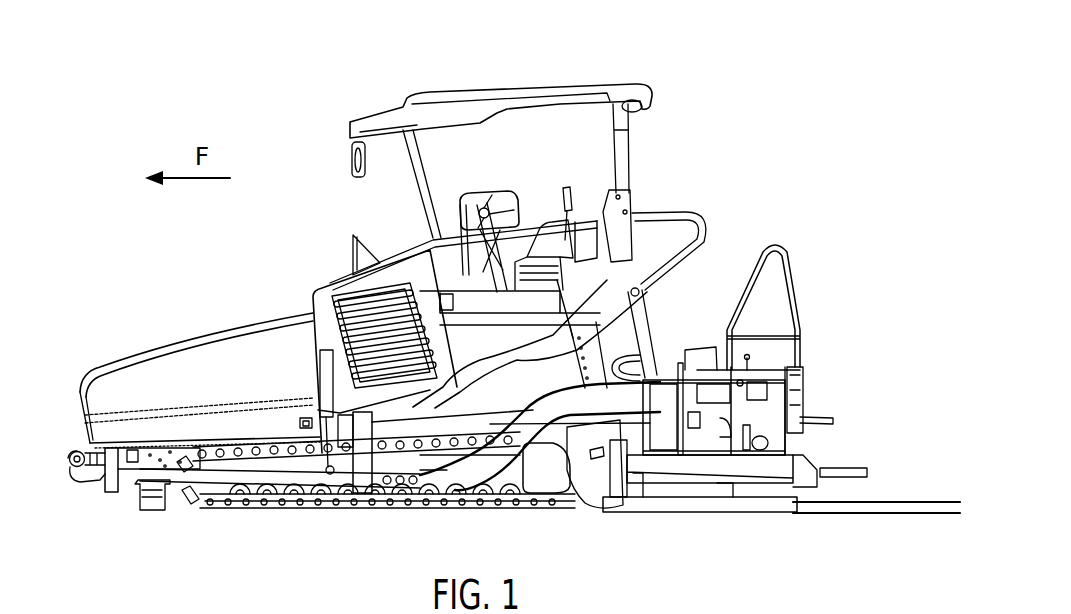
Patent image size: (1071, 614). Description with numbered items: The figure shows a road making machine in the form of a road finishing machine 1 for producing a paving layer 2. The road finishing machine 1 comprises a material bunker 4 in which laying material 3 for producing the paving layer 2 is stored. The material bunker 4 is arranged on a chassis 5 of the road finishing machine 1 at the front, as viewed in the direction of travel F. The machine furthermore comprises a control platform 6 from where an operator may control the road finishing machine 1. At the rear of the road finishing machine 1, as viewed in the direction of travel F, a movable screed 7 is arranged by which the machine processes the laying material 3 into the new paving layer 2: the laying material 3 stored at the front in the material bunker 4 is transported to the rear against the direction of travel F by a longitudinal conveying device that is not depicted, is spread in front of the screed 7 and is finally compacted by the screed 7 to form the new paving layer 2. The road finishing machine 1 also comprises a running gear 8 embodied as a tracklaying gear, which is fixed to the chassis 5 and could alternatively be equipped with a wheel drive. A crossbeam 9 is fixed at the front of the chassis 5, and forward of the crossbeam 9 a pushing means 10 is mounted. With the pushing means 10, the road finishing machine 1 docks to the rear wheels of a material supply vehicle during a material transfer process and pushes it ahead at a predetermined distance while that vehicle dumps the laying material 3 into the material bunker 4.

The road finishing machine 1 is at (720, 66).
The paving layer 2 is at (903, 501).
The laying material 3 is at (85, 412).
The material bunker 4 is at (188, 356).
The chassis 5 is at (143, 462).
The control platform 6 is at (488, 212).
The screed 7 is at (779, 215).
The running gear 8 is at (208, 522).
The crossbeam 9 is at (110, 490).
The pushing means 10 is at (72, 487).